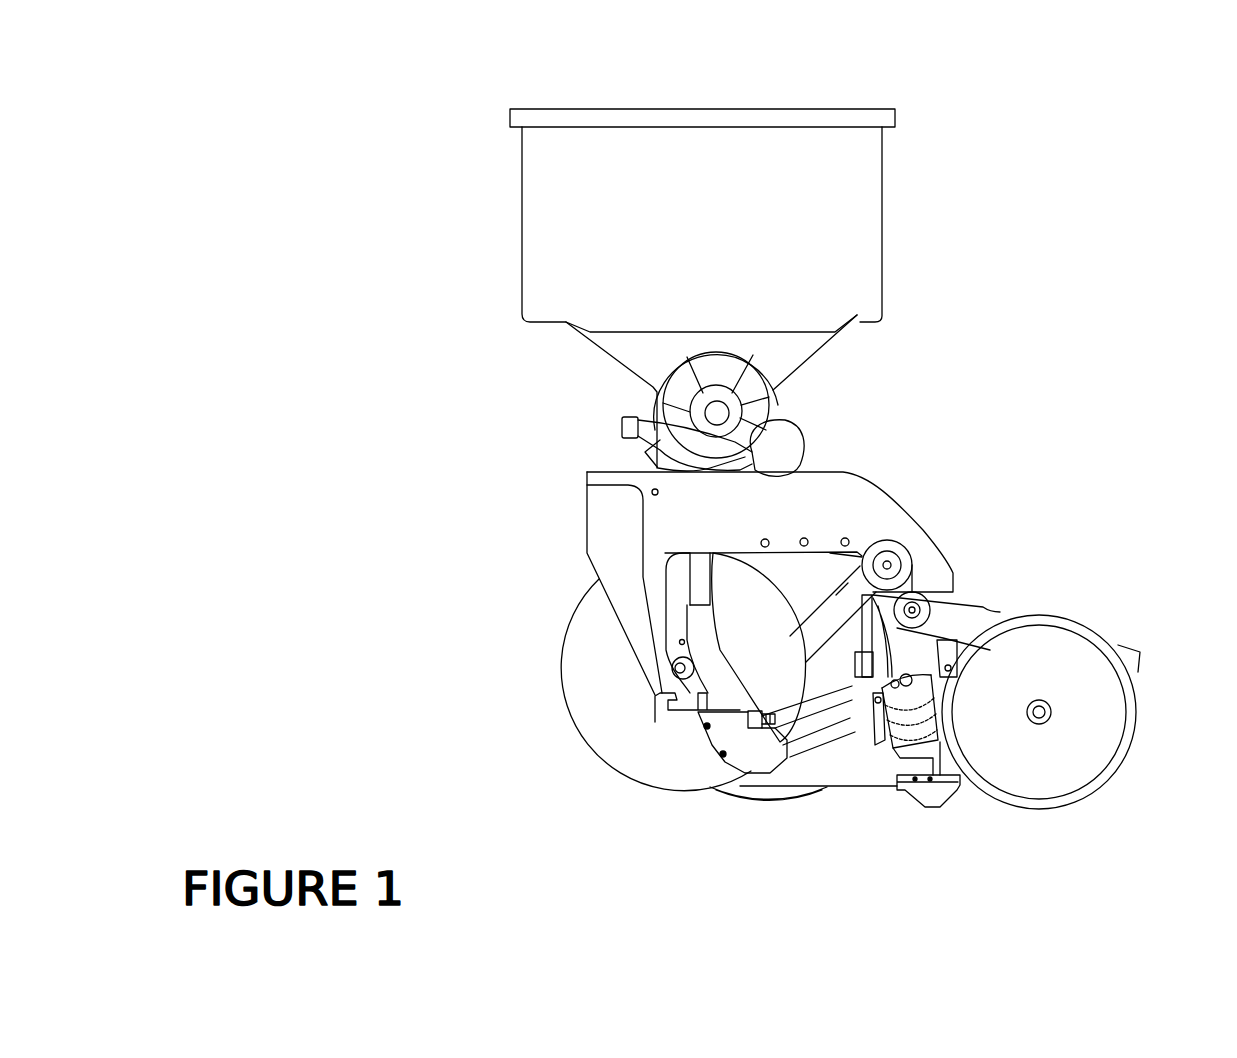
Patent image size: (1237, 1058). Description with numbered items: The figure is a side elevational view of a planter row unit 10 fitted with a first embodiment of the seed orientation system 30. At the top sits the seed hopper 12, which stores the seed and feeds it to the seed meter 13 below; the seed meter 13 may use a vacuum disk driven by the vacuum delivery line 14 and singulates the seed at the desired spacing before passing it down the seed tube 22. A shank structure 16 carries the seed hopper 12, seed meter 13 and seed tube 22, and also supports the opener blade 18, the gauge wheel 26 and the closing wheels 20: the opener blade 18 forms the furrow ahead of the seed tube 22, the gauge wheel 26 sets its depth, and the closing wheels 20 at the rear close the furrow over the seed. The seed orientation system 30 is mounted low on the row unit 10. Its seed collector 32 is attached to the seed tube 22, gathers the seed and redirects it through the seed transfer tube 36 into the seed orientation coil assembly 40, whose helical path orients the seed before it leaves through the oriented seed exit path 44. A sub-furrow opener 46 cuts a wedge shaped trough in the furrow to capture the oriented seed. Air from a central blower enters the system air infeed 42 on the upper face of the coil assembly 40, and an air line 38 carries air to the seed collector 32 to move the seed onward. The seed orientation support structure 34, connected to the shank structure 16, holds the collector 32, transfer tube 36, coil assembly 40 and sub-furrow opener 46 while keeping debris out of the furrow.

The row unit 10 is at (1024, 58).
The seed hopper 12 is at (865, 243).
The seed meter 13 is at (773, 407).
The vacuum delivery line 14 is at (622, 428).
The shank structure 16 is at (887, 505).
The opener blade 18 is at (573, 633).
The closing wheels 20 is at (1130, 690).
The seed tube 22 is at (697, 613).
The gauge wheel 26 is at (722, 795).
The seed orientation system 30 is at (836, 800).
The seed collector 32 is at (745, 735).
The seed orientation support structure 34 is at (667, 720).
The seed transfer tube 36 is at (781, 762).
The air line 38 is at (762, 760).
The seed orientation coil assembly 40 is at (940, 727).
The system air infeed 42 is at (907, 677).
The oriented seed exit path 44 is at (965, 775).
The sub-furrow opener 46 is at (923, 800).